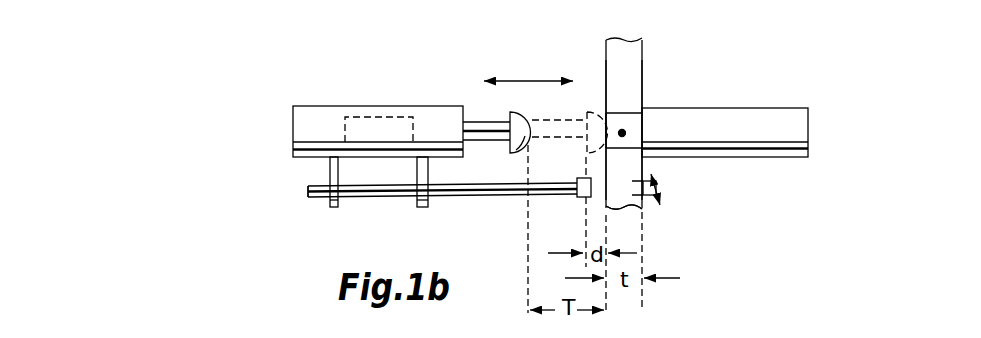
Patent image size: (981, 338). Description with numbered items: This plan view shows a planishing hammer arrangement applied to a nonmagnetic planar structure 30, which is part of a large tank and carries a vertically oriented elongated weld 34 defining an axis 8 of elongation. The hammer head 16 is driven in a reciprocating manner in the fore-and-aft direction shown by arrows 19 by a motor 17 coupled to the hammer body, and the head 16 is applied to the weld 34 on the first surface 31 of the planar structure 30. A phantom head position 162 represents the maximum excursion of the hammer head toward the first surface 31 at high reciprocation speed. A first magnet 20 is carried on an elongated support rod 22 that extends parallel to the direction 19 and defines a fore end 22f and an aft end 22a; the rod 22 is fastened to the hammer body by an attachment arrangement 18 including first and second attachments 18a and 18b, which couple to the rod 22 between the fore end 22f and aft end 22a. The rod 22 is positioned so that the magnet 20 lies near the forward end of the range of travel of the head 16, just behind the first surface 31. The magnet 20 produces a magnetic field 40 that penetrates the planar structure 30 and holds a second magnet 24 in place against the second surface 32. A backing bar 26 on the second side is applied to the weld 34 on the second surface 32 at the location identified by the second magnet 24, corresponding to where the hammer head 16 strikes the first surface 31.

The axis of elongation 8 is at (624, 131).
The hammer head 16 is at (515, 156).
The phantom head position 162 is at (590, 145).
The motor 17 is at (375, 116).
The attachment arrangement 18 is at (246, 152).
The first attachment 18a is at (328, 168).
The second attachment 18b is at (416, 203).
The direction of reciprocating motion 19 is at (521, 78).
The first magnet 20 is at (592, 200).
The support rod 22 is at (460, 196).
The aft end 22a is at (310, 197).
The fore end 22f is at (562, 198).
The second magnet 24 is at (663, 196).
The backing bar 26 is at (790, 107).
The planar structure 30 is at (643, 39).
The first surface 31 is at (605, 53).
The second surface 32 is at (643, 70).
The weld 34 is at (605, 113).
The magnetic field 40 is at (658, 173).